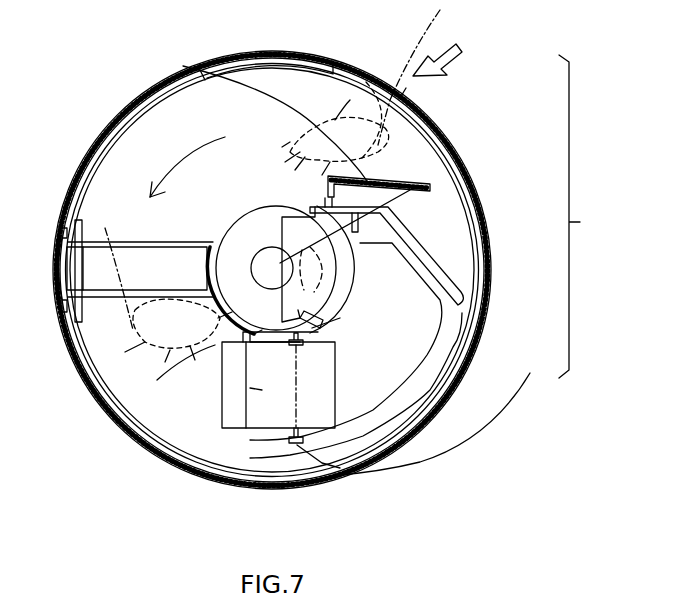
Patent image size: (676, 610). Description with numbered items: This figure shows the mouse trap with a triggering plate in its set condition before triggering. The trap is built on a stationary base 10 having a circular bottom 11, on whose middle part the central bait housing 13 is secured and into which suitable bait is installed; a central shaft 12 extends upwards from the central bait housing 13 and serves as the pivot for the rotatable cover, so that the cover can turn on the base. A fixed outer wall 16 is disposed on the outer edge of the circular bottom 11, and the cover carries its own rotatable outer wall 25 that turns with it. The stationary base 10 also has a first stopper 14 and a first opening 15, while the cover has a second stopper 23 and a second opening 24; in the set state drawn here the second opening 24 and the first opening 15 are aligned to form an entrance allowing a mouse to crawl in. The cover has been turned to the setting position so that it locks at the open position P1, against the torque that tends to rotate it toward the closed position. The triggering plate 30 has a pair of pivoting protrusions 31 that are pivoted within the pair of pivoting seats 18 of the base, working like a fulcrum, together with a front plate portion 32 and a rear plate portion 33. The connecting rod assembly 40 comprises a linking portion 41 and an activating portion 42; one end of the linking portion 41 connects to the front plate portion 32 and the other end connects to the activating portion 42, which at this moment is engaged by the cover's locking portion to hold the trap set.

The stationary base 10 is at (588, 216).
The circular bottom 11 is at (445, 227).
The central shaft 12 is at (430, 186).
The central bait housing 13 is at (332, 272).
The first stopper 14 is at (437, 262).
The first opening 15 is at (413, 104).
The fixed outer wall 16 is at (412, 145).
The pivoting seats 18 is at (314, 322).
The second stopper 23 is at (195, 68).
The second opening 24 is at (327, 60).
The rotatable outer wall 25 is at (272, 49).
The triggering plate 30 is at (300, 456).
The pivoting protrusions 31 is at (205, 563).
The front plate portion 32 is at (363, 363).
The rear plate portion 33 is at (250, 440).
The connecting rod assembly 40 is at (129, 173).
The linking portion 41 is at (140, 262).
The activating portion 42 is at (60, 212).
The open position P1 is at (80, 393).